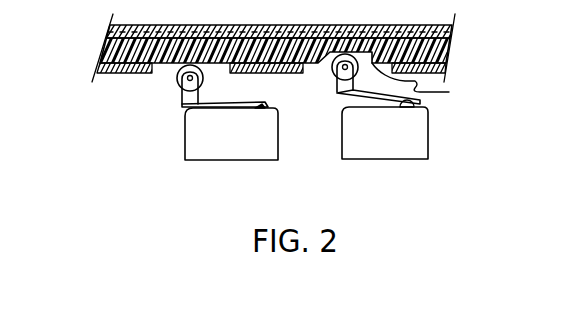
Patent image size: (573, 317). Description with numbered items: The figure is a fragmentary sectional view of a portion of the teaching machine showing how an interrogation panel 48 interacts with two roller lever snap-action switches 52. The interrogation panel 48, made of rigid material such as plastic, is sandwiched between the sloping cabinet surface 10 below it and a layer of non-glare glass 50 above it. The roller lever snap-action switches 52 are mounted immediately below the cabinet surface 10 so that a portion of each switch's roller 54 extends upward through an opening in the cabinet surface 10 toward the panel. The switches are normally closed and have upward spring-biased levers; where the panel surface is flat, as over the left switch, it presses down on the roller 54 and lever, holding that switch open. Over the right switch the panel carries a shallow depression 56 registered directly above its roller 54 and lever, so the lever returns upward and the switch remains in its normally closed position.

The sloping cabinet surface 10 is at (94, 68).
The interrogation panel 48 is at (100, 52).
The layer of non-glare glass 50 is at (108, 30).
The roller lever snap-action switches 52 is at (171, 185).
The roller 54 is at (177, 78).
The shallow depression 56 is at (403, 79).